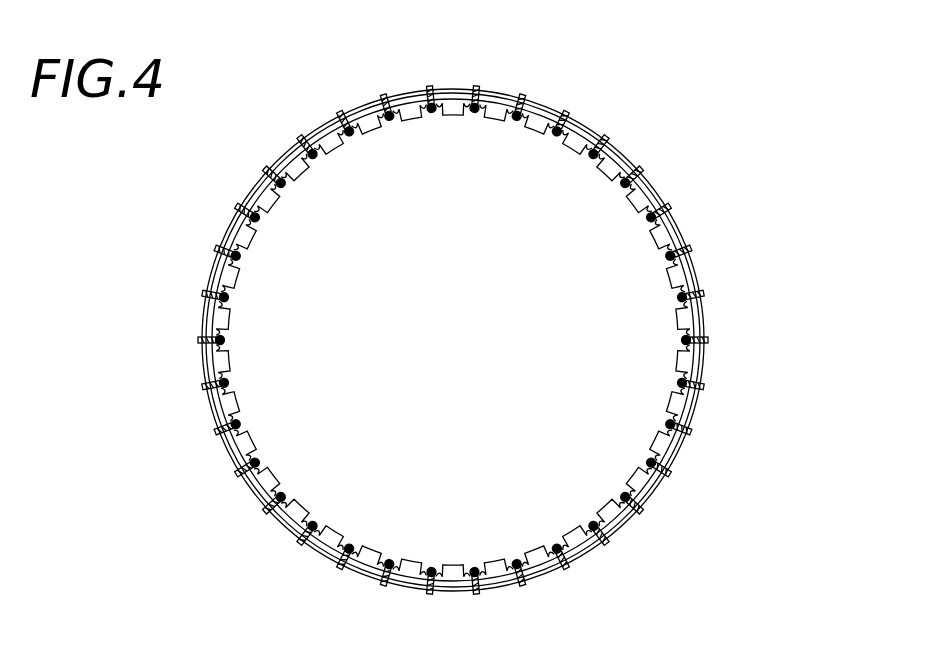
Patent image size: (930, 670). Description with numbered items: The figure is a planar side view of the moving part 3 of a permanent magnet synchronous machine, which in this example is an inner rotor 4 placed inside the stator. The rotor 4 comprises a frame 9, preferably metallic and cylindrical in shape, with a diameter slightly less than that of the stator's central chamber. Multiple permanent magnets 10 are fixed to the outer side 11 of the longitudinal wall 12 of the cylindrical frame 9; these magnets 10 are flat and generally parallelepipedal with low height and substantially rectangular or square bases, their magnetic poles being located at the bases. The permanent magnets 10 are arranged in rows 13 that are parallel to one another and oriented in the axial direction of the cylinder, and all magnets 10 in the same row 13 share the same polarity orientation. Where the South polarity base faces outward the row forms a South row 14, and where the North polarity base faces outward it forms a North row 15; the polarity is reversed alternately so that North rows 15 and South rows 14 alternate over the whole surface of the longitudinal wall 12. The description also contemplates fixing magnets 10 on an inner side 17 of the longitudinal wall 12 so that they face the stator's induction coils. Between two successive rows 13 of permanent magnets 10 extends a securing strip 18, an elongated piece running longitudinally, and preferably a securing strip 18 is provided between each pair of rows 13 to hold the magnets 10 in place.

The moving part 3 is at (163, 162).
The inner rotor 4 is at (425, 320).
The frame 9 is at (339, 158).
The permanent magnets 10 is at (365, 108).
The outer side 11 is at (458, 90).
The longitudinal wall 12 is at (413, 114).
The rows 13 is at (655, 185).
The South row 14 is at (705, 273).
The North row 15 is at (700, 226).
The inner side 17 is at (457, 114).
The securing strip 18 is at (297, 134).